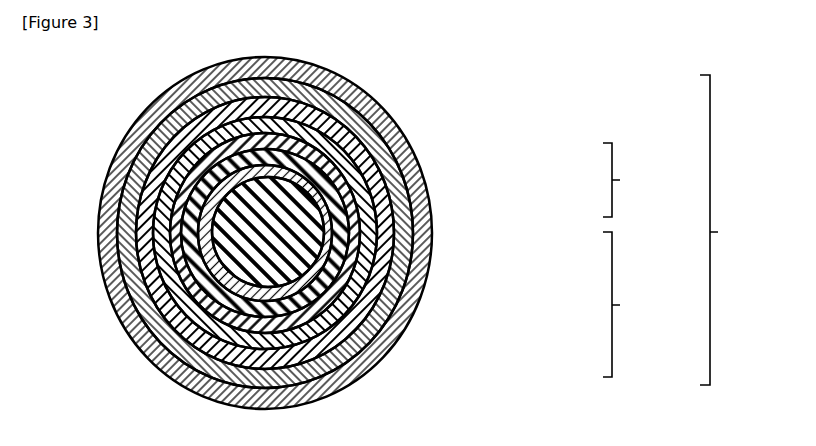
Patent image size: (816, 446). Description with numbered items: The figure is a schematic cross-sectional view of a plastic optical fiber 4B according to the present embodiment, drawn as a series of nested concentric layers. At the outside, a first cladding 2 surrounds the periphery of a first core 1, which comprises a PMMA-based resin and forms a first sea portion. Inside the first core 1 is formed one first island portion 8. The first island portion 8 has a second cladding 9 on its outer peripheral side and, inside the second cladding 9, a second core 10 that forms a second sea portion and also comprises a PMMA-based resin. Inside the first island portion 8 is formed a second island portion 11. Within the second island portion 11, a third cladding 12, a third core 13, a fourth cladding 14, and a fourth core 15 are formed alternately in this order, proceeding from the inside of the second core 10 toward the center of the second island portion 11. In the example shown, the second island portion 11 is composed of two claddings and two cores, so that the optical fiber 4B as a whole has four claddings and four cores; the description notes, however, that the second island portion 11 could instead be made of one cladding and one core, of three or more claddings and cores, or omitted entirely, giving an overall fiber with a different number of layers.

The first cladding 2 is at (335, 78).
The first core 1 is at (338, 97).
The second cladding 9 is at (340, 127).
The second core 10 is at (340, 170).
The first island portion 8 is at (627, 180).
The third cladding 12 is at (335, 210).
The third core 13 is at (335, 243).
The fourth cladding 14 is at (335, 267).
The fourth core 15 is at (332, 310).
The second island portion 11 is at (639, 304).
The plastic optical fiber 4B is at (741, 230).